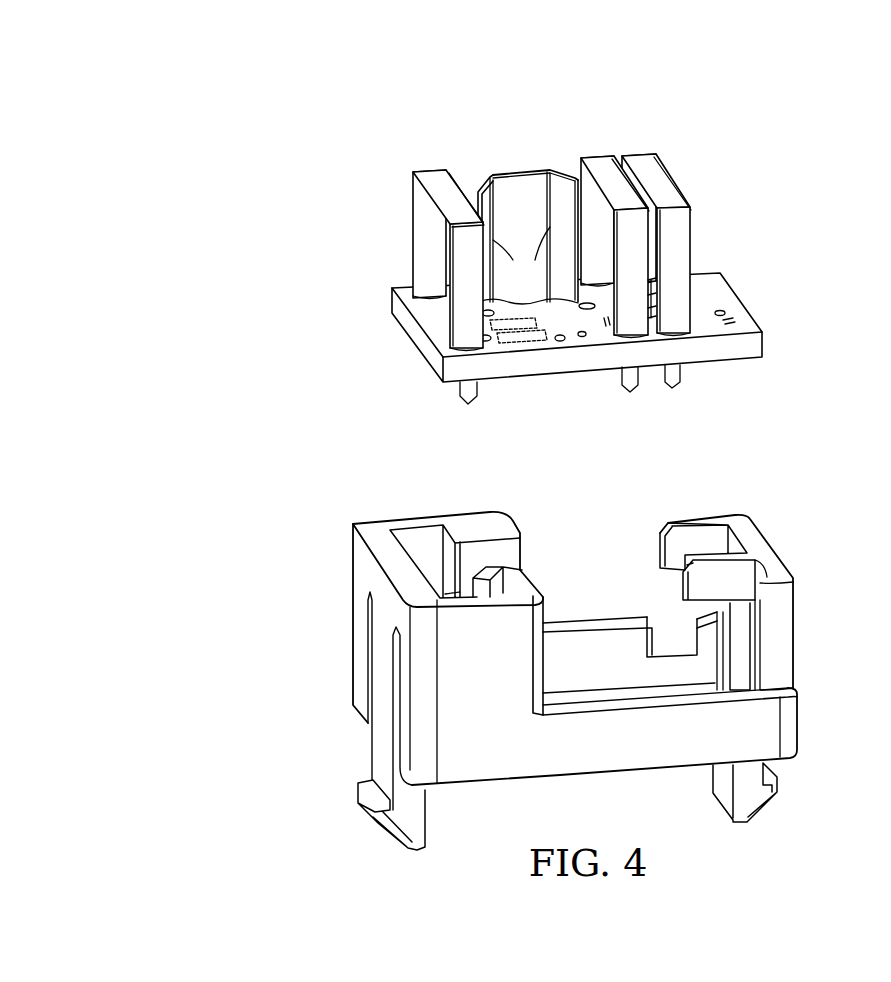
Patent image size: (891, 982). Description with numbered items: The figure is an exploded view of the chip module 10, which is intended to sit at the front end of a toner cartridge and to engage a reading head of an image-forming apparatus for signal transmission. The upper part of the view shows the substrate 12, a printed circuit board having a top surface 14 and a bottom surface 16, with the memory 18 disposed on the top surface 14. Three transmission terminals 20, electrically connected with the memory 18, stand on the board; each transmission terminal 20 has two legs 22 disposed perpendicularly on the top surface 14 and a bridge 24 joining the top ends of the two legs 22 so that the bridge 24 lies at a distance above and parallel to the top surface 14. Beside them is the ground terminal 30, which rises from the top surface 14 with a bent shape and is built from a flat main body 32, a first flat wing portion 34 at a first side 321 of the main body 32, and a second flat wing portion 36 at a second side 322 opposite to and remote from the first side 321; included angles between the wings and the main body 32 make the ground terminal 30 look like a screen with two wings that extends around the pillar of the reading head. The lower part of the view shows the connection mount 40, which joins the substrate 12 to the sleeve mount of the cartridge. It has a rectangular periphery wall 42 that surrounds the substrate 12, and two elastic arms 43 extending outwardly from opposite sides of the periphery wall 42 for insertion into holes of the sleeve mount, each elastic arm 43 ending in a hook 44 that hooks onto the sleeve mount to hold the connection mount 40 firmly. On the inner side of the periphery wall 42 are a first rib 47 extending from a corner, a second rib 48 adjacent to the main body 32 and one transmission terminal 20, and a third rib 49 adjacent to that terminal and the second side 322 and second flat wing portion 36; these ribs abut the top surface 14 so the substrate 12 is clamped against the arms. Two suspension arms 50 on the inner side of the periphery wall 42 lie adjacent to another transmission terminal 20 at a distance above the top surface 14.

The chip module 10 is at (178, 269).
The substrate 12 is at (752, 346).
The top surface 14 is at (748, 328).
The bottom surface 16 is at (742, 367).
The memory 18 is at (652, 293).
The transmission terminal 20 is at (653, 172).
The leg 22 is at (430, 220).
The bridge 24 is at (447, 190).
The ground terminal 30 is at (593, 93).
The main body 32 is at (525, 193).
The first flat wing portion 34 is at (558, 187).
The second flat wing portion 36 is at (487, 193).
The first side 321 is at (533, 237).
The second side 322 is at (495, 240).
The connection mount 40 is at (392, 557).
The periphery wall 42 is at (590, 620).
The elastic arm 43 is at (383, 748).
The hook 44 is at (373, 797).
The first rib 47 is at (673, 637).
The second rib 48 is at (475, 528).
The third rib 49 is at (520, 583).
The suspension arm 50 is at (687, 540).